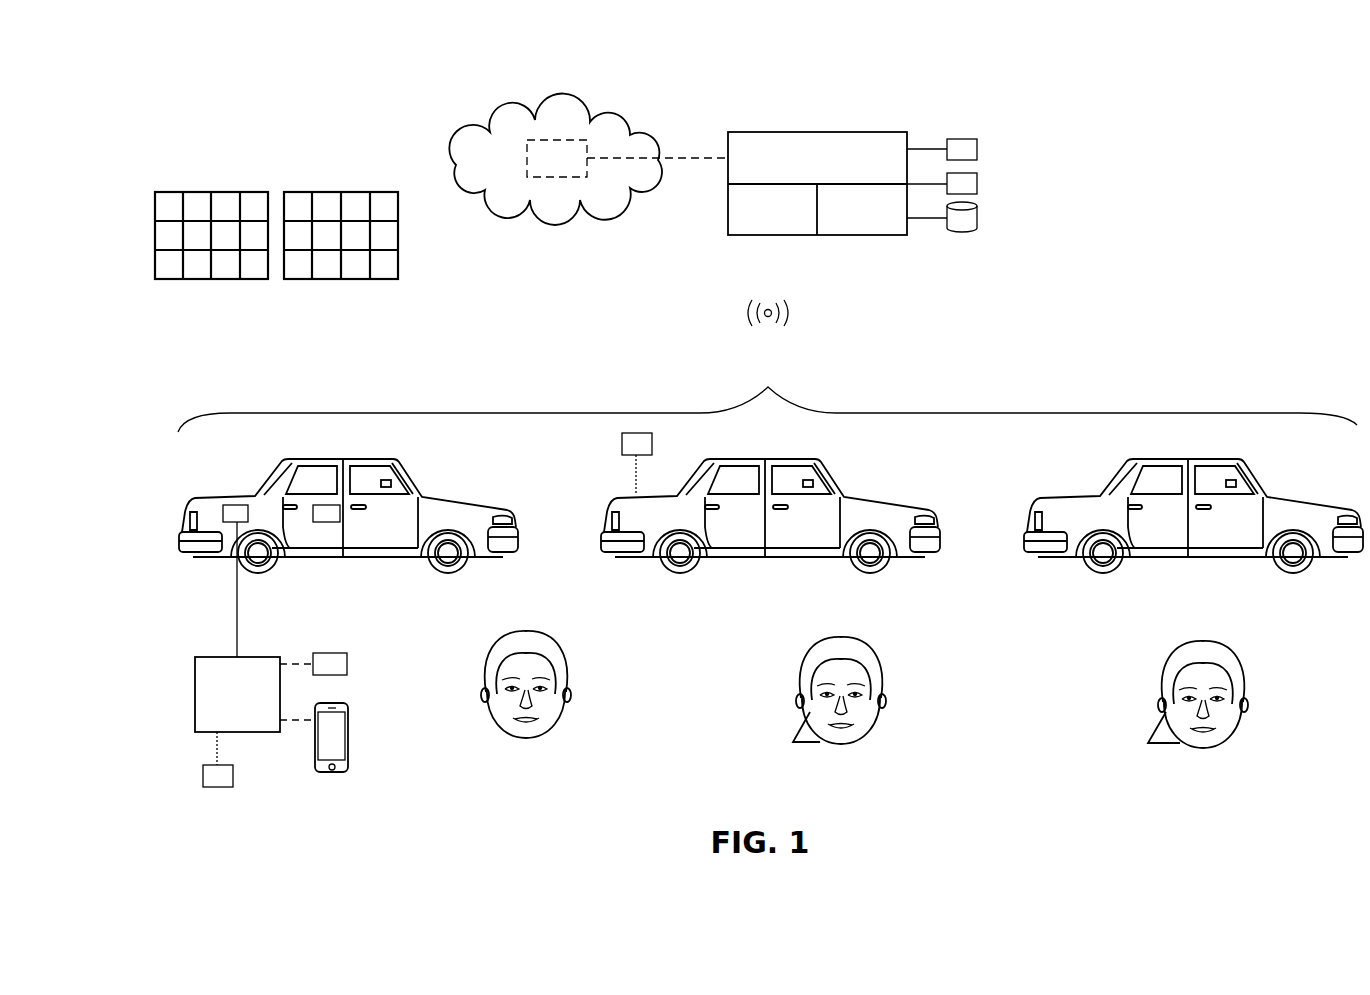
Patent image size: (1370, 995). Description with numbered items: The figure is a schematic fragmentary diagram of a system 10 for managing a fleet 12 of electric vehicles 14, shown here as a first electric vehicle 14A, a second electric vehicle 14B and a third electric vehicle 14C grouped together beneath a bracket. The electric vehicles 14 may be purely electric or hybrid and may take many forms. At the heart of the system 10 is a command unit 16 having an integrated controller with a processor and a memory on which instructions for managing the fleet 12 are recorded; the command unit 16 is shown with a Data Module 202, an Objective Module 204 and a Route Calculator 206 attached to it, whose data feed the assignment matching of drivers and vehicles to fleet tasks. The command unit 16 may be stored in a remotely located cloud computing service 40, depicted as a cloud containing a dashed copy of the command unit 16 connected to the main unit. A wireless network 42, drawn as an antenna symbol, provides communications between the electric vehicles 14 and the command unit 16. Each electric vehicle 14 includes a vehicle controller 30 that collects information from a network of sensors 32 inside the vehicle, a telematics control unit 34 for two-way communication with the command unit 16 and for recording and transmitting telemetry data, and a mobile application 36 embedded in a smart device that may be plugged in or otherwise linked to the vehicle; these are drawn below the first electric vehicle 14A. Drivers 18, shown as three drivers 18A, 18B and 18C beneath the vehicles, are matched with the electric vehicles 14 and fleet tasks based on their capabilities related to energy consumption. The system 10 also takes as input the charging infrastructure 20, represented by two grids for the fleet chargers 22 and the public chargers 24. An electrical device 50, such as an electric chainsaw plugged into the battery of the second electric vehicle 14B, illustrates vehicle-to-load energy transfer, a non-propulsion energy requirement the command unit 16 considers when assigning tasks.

The system 10 is at (643, 312).
The fleet 12 is at (878, 375).
The electric vehicles 14 is at (435, 462).
The first electric vehicle 14A is at (325, 502).
The second electric vehicle 14B is at (770, 498).
The third electric vehicle 14C is at (1280, 468).
The command unit 16 is at (794, 149).
The drivers 18 is at (588, 657).
The first driver 18A is at (528, 671).
The second driver 18B is at (798, 632).
The third driver 18C is at (1160, 636).
The charging infrastructure 20 is at (276, 161).
The fleet chargers 22 is at (212, 186).
The public chargers 24 is at (345, 186).
The vehicle controller 30 is at (265, 657).
The sensors 32 is at (217, 787).
The telematics control unit 34 is at (347, 668).
The mobile application 36 is at (348, 735).
The cloud computing service 40 is at (473, 106).
The wireless network 42 is at (795, 292).
The electrical device 50 is at (652, 445).
The Data Module 202 is at (977, 220).
The Objective Module 204 is at (977, 186).
The Route Calculator 206 is at (977, 148).